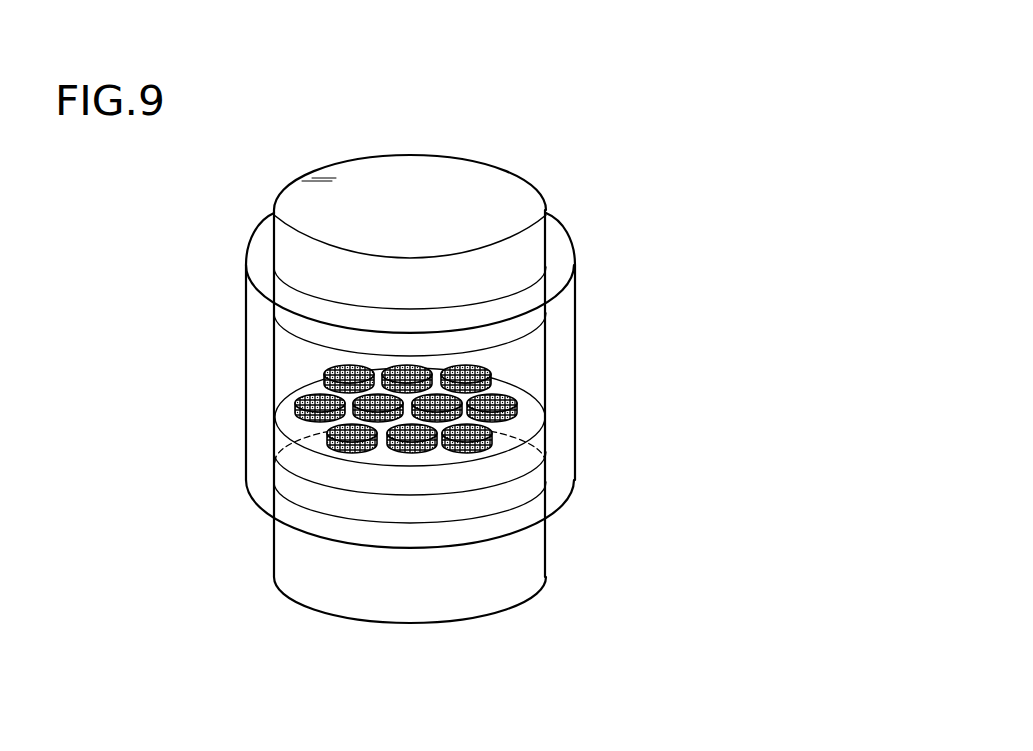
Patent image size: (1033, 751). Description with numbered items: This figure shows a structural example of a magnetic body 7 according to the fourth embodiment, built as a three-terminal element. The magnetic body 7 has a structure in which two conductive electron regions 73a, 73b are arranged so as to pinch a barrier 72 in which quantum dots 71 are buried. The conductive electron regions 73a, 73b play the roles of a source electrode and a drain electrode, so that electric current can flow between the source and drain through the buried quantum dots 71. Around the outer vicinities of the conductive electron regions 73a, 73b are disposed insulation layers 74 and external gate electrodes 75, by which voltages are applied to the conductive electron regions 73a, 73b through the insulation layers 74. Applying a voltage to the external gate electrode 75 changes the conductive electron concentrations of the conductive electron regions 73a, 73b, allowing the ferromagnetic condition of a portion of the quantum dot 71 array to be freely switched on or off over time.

The magnetic body 7 is at (202, 242).
The quantum dot 71 is at (497, 402).
The barrier 72 is at (270, 450).
The conductive electron region 73a is at (413, 165).
The conductive electron region 73b is at (512, 543).
The insulation layer 74 is at (503, 300).
The external gate electrode 75 is at (556, 278).